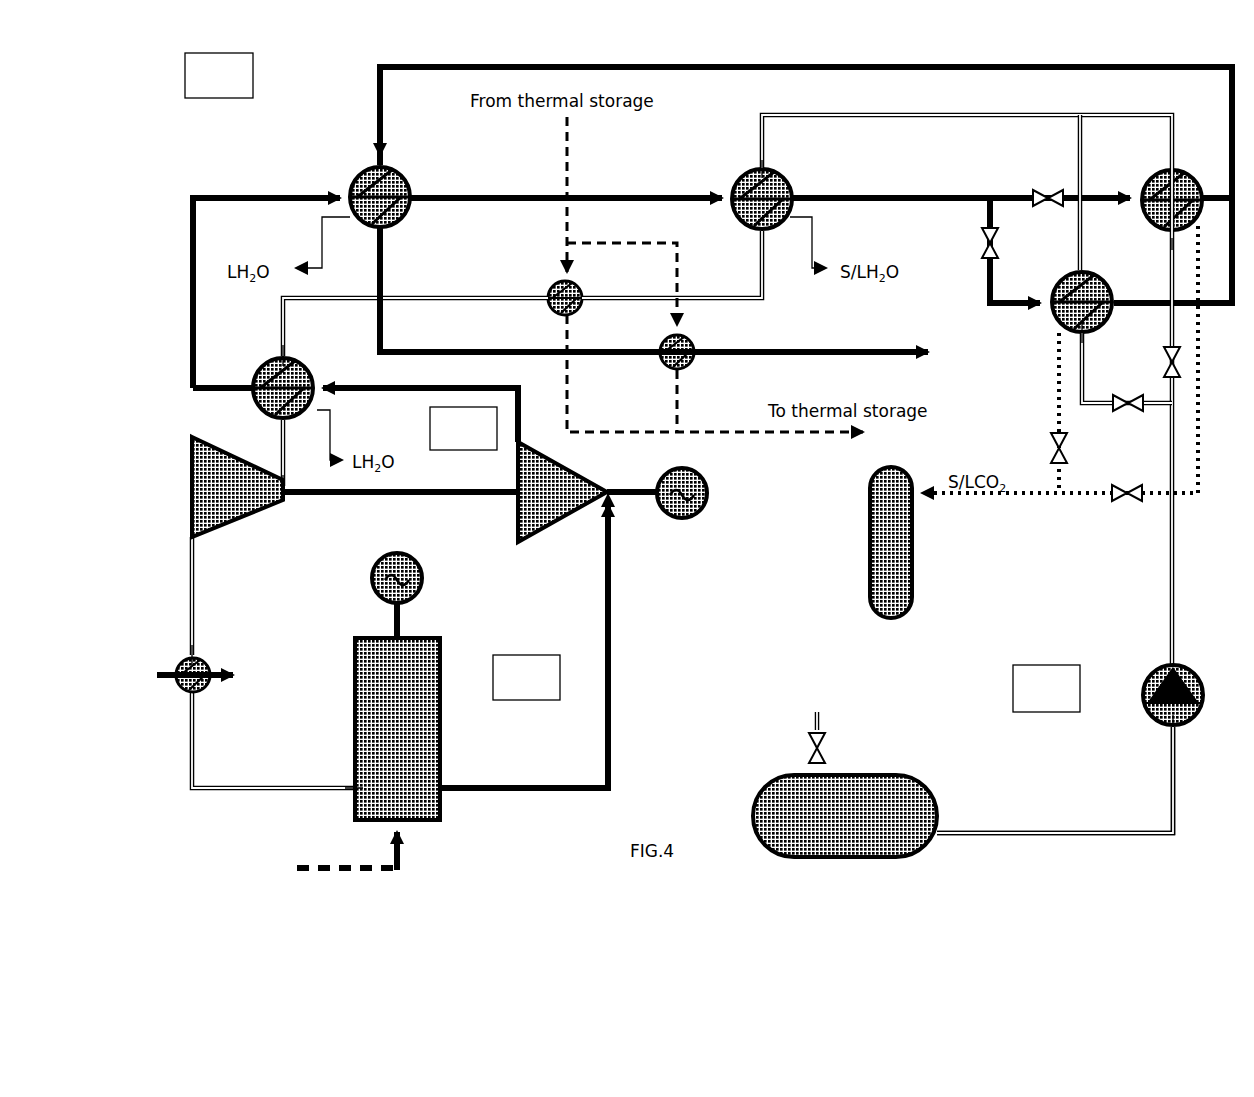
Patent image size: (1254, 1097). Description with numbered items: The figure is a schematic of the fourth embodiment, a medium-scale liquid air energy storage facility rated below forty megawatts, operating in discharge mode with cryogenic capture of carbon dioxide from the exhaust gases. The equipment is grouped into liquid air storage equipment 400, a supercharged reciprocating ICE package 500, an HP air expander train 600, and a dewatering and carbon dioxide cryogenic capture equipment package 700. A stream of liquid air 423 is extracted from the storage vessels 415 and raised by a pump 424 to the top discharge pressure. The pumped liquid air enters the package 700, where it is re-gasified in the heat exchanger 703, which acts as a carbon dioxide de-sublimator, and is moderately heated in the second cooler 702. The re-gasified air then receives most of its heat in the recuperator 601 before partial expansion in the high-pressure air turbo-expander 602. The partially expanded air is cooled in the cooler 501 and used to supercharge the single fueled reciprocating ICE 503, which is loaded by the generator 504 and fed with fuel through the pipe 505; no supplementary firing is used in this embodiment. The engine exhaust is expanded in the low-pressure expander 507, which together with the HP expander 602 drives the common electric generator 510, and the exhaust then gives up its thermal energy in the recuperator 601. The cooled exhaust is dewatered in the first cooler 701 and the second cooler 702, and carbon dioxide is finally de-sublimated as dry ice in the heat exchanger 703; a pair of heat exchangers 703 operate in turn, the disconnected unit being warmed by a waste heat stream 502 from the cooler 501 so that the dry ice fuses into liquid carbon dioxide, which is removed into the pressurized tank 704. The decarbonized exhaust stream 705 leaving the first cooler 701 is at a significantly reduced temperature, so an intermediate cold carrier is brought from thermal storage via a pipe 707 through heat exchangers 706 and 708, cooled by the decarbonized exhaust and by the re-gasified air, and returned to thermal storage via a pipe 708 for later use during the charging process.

The dewatering and carbon dioxide cryogenic capture equipment package 700 is at (219, 75).
The first cooler 701 is at (408, 180).
The second cooler 702 is at (788, 182).
The heat exchanger 703 is at (1150, 228).
The decarbonized exhaust stream 705 is at (383, 272).
The heat exchanger 706 is at (697, 346).
The pipe 707 is at (570, 172).
The pipe 708 is at (548, 290).
The HP air expander train 600 is at (463, 428).
The recuperator 601 is at (265, 356).
The high-pressure air turbo-expander 602 is at (278, 498).
The supercharged reciprocating ICE package 500 is at (526, 677).
The cooler 501 is at (205, 692).
The waste heat stream 502 is at (228, 672).
The fueled reciprocating ICE 503 is at (355, 702).
The generator 504 is at (421, 574).
The pipe 505 is at (302, 866).
The low-pressure expander 507 is at (515, 500).
The common electric generator 510 is at (672, 518).
The liquid air storage equipment 400 is at (1046, 688).
The storage vessels 415 is at (928, 778).
The stream of liquid air 423 is at (1176, 785).
The pump 424 is at (1200, 715).
The pressurized tank 704 is at (912, 565).